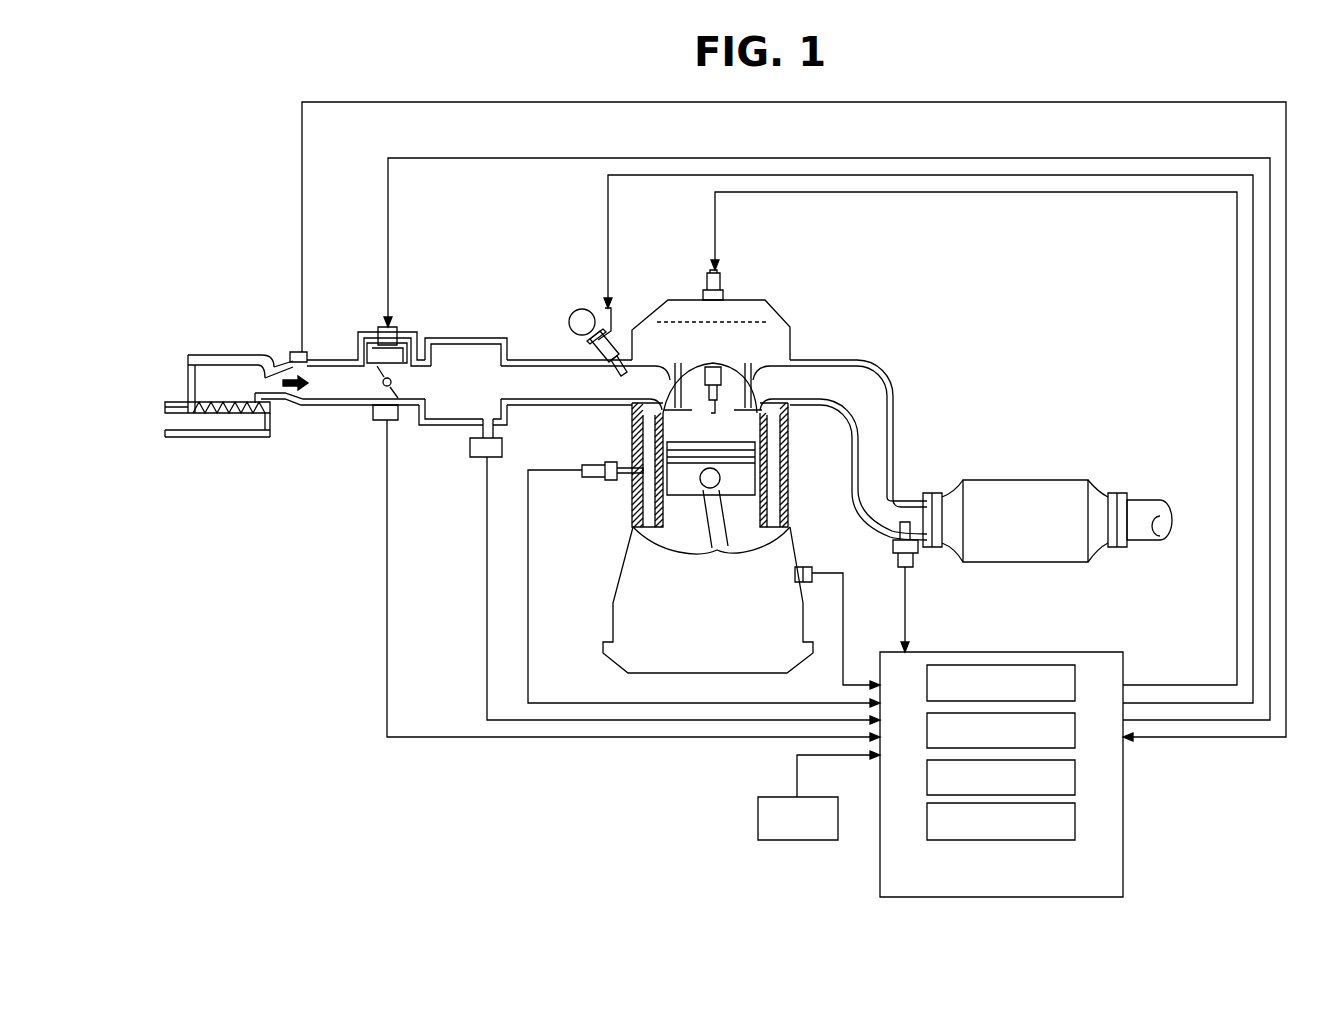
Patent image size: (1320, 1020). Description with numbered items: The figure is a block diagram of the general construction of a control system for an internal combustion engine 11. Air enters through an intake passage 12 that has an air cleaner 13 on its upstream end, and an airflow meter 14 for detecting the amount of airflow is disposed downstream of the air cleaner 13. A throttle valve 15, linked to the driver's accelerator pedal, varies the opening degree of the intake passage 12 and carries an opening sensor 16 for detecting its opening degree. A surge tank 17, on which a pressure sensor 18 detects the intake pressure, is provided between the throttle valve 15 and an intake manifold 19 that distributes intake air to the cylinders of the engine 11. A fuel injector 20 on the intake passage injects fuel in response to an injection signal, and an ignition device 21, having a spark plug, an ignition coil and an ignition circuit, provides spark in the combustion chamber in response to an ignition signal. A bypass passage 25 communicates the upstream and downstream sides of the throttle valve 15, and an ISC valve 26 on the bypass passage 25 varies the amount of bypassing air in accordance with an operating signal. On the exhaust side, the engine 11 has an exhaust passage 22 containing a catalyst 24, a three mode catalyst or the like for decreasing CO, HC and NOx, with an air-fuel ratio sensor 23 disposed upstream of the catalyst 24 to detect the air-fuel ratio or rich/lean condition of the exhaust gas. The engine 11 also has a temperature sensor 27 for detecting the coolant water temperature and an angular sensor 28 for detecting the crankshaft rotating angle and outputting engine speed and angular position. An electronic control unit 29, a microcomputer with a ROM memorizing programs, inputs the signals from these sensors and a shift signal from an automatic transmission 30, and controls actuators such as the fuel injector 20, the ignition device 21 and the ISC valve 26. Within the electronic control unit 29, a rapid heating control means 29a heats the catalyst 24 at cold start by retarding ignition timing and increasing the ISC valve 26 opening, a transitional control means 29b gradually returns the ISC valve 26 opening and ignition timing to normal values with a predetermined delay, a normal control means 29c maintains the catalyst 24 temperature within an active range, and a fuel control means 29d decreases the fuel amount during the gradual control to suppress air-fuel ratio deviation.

The internal combustion engine 11 is at (795, 306).
The intake passage 12 is at (324, 358).
The air cleaner 13 is at (236, 414).
The airflow meter 14 is at (294, 352).
The throttle valve 15 is at (403, 392).
The opening sensor 16 is at (376, 421).
The surge tank 17 is at (464, 338).
The pressure sensor 18 is at (469, 458).
The intake manifold 19 is at (515, 406).
The fuel injector 20 is at (592, 356).
The ignition device 21 is at (734, 384).
The exhaust passage 22 is at (843, 358).
The air-fuel ratio sensor 23 is at (914, 556).
The catalyst 24 is at (1013, 480).
The bypass passage 25 is at (415, 332).
The ISC valve 26 is at (382, 323).
The temperature sensor 27 is at (612, 480).
The angular sensor 28 is at (810, 565).
The electronic control unit (ECU) 29 is at (1036, 774).
The rapid heating control means 29a is at (1001, 683).
The transitional control means 29b is at (1001, 730).
The normal control means 29c is at (1001, 777).
The fuel control means 29d is at (1001, 821).
The automatic transmission 30 is at (758, 810).